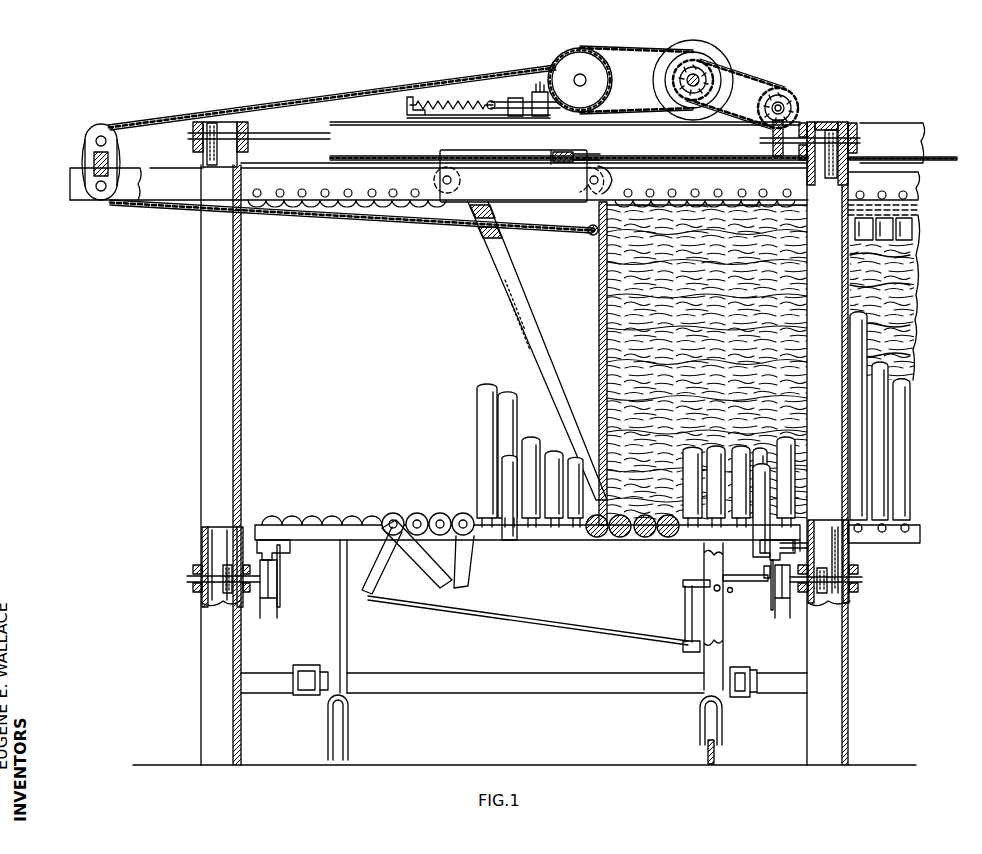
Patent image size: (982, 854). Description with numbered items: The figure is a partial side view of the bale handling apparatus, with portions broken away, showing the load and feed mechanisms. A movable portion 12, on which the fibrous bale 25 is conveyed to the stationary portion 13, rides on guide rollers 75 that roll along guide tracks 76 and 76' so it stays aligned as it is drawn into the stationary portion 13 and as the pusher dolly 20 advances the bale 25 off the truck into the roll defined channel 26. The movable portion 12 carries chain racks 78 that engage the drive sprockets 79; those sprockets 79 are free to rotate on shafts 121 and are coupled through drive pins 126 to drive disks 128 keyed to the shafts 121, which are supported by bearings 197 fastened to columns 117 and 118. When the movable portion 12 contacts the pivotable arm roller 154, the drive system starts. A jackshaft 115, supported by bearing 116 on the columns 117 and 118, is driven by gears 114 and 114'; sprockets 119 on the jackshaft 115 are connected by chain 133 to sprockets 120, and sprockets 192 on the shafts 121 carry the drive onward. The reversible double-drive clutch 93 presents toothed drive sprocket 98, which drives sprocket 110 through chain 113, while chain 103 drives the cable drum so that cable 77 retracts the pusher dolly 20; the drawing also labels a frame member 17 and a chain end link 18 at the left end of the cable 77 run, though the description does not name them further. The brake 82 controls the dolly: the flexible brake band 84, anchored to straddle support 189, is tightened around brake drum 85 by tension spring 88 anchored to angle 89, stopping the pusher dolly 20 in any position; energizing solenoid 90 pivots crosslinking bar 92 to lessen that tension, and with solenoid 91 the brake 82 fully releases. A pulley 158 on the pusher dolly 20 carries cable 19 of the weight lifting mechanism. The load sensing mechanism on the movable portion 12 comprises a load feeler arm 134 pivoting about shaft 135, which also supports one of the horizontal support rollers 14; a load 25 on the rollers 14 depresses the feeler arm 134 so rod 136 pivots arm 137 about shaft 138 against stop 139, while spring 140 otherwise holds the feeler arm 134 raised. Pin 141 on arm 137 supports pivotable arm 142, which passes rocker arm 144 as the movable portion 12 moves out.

The movable portion 12 is at (428, 692).
The stationary portion 13 is at (368, 319).
The horizontal support rollers 14 is at (440, 514).
The conveyor frame beam 17 is at (169, 176).
The chain link end 18 is at (76, 184).
The cable 19 is at (936, 160).
The pusher dolly 20 is at (574, 188).
The fibrous bale 25 is at (910, 268).
The roll defined channel 26 is at (910, 325).
The guide rollers 75 is at (306, 668).
The guide track 76 is at (297, 699).
The guide track 76' is at (768, 701).
The cable 77 is at (300, 98).
The chain racks 78 is at (284, 552).
The drive sprockets 79 is at (280, 590).
The brake 82 is at (578, 46).
The flexible brake band 84 is at (560, 110).
The brake drum 85 is at (596, 62).
The tension spring 88 is at (445, 100).
The angle 89 is at (398, 117).
The solenoid 90 is at (514, 98).
The solenoid 91 is at (688, 40).
The crosslinking bar 92 is at (490, 101).
The reversible double-drive clutch 93 is at (708, 62).
The toothed drive sprocket 98 is at (706, 80).
The chain 103 is at (650, 41).
The sprocket 110 is at (788, 92).
The chain 113 is at (758, 80).
The gear 114 is at (569, 140).
The gear 114' is at (809, 92).
The jackshaft 115 is at (188, 135).
The bearing 116 is at (197, 123).
The column 117 is at (204, 718).
The column 118 is at (836, 726).
The sprockets 119 is at (216, 122).
The sprockets 120 is at (220, 591).
The shafts 121 is at (190, 577).
The drive pins 126 is at (254, 546).
The drive disks 128 is at (264, 598).
The chain 133 is at (202, 545).
The load feeler arm 134 is at (462, 558).
The shaft 135 is at (393, 514).
The rod 136 is at (576, 626).
The arm 137 is at (684, 618).
The shaft 138 is at (685, 583).
The stop 139 is at (722, 590).
The spring 140 is at (688, 647).
The pin 141 is at (707, 572).
The pivotable arm 142 is at (748, 574).
The rocker arm 144 is at (764, 560).
The pivotable arm roller 154 is at (805, 540).
The pulley 158 is at (548, 156).
The straddle support 189 is at (540, 92).
The sprockets 192 is at (225, 600).
The bearings 197 is at (198, 567).